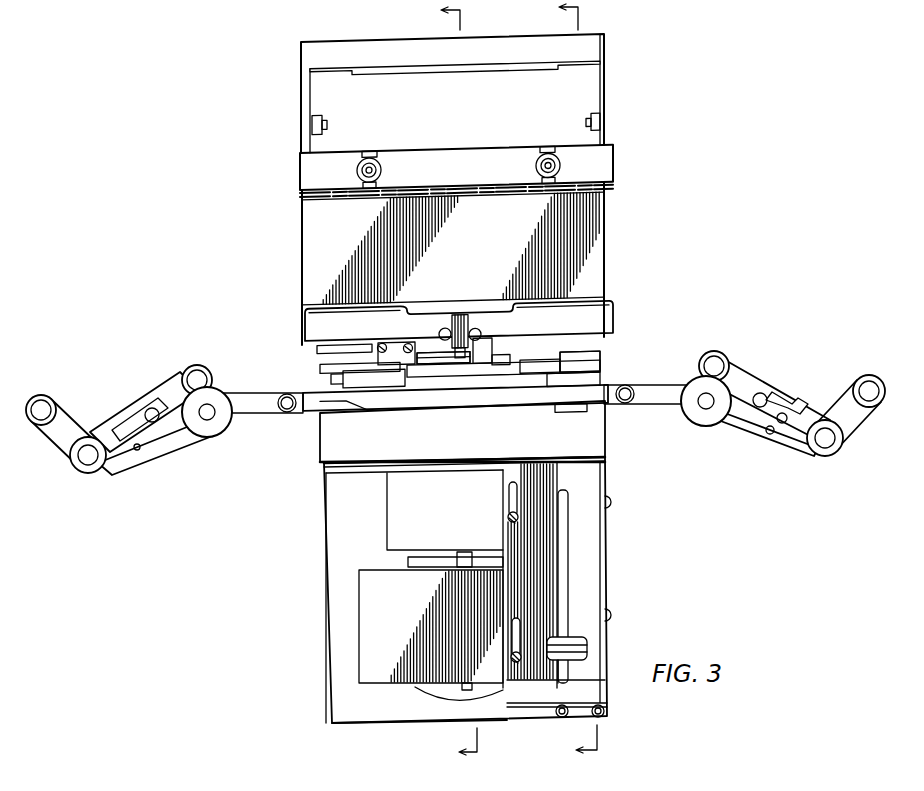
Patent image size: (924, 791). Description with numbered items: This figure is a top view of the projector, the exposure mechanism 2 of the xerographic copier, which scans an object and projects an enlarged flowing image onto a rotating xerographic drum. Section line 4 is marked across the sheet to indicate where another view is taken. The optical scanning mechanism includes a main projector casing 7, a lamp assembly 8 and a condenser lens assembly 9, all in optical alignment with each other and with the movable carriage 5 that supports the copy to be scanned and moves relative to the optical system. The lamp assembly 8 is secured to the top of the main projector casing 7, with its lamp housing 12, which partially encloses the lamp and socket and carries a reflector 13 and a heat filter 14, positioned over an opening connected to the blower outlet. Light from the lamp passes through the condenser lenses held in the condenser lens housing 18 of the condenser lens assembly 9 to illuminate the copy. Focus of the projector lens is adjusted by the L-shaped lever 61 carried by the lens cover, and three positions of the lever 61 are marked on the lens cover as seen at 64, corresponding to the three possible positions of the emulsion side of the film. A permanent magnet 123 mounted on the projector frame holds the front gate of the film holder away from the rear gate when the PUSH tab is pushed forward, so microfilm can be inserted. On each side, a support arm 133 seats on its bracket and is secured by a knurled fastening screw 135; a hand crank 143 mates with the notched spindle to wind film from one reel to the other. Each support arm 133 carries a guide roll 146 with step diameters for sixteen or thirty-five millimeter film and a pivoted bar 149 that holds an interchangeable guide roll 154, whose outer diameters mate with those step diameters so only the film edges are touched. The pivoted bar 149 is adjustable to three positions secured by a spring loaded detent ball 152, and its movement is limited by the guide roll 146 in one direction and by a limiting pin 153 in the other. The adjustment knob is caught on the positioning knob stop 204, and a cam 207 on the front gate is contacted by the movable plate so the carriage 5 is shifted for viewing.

The exposure mechanism 2 is at (616, 538).
The section line 4 is at (570, 383).
The movable carriage 5 is at (451, 384).
The main projector casing 7 is at (325, 513).
The lamp assembly 8 is at (362, 565).
The condenser lens assembly 9 is at (375, 492).
The lamp housing 12 is at (387, 570).
The reflector 13 is at (428, 686).
The heat filter 14 is at (455, 550).
The condenser lens housing 18 is at (388, 509).
The lever 61 is at (457, 318).
The lever position markings 64 is at (439, 350).
The permanent magnet 123 is at (392, 341).
The support arm 133 is at (162, 448).
The knurled fastening screw 135 is at (284, 394).
The hand crank 143 is at (50, 446).
The guide roll 146 is at (205, 437).
The pivoted bar 149 is at (177, 381).
The spring loaded detent ball 152 is at (781, 424).
The limiting pin 153 is at (136, 451).
The guide roll 154 is at (209, 372).
The positioning knob stop 204 is at (570, 359).
The cam 207 is at (531, 362).